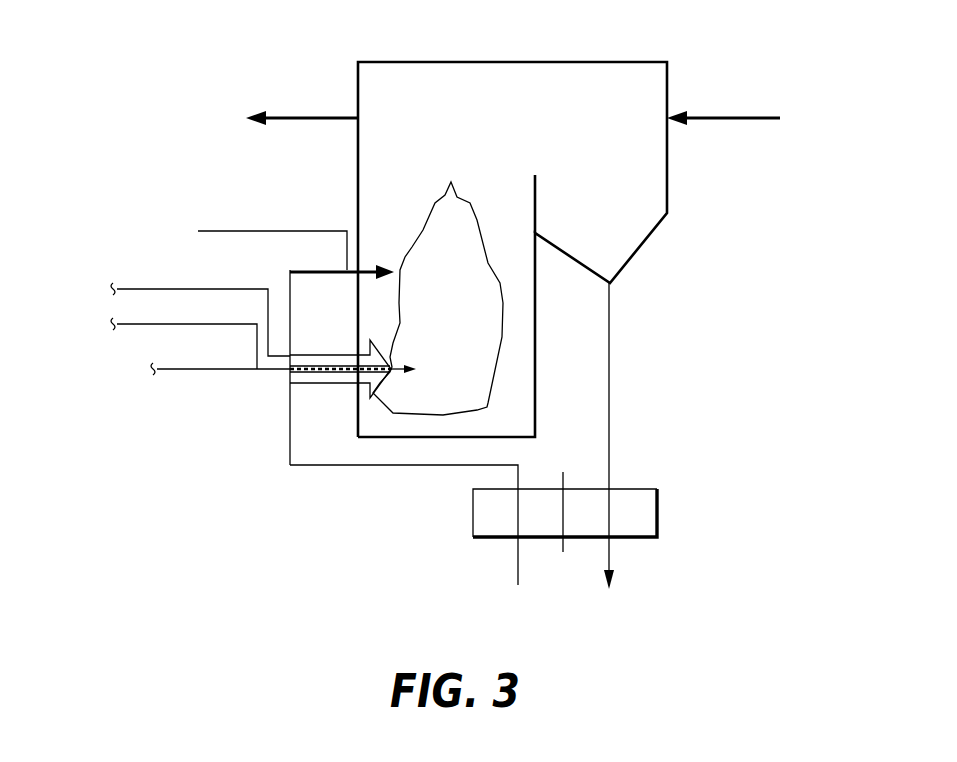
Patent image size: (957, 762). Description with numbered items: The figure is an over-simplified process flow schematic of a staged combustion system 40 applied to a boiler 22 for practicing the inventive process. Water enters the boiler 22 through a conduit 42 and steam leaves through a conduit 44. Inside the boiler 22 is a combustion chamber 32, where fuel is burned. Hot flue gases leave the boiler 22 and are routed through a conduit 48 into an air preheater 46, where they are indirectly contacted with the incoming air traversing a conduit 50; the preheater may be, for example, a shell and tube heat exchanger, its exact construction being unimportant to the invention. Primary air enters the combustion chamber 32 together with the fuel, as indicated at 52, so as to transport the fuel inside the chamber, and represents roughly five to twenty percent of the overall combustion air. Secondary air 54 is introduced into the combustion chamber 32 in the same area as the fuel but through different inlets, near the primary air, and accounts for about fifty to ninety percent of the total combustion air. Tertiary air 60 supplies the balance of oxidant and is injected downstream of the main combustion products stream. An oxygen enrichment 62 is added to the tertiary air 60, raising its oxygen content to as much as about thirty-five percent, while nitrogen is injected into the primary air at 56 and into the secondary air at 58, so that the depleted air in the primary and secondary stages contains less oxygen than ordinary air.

The staged combustion system 40 is at (728, 40).
The boiler 22 is at (529, 137).
The combustion chamber 32 is at (524, 236).
The conduit 42 is at (732, 120).
The conduit 44 is at (307, 120).
The air preheater 46 is at (635, 489).
The conduit 48 is at (610, 363).
The conduit 50 is at (517, 557).
The primary air and fuel inlet 52 is at (188, 369).
The secondary air 54 is at (331, 386).
The nitrogen injection into primary air 56 is at (153, 324).
The nitrogen injection into secondary air 58 is at (142, 289).
The tertiary air 60 is at (308, 268).
The oxygen enrichment 62 is at (268, 231).